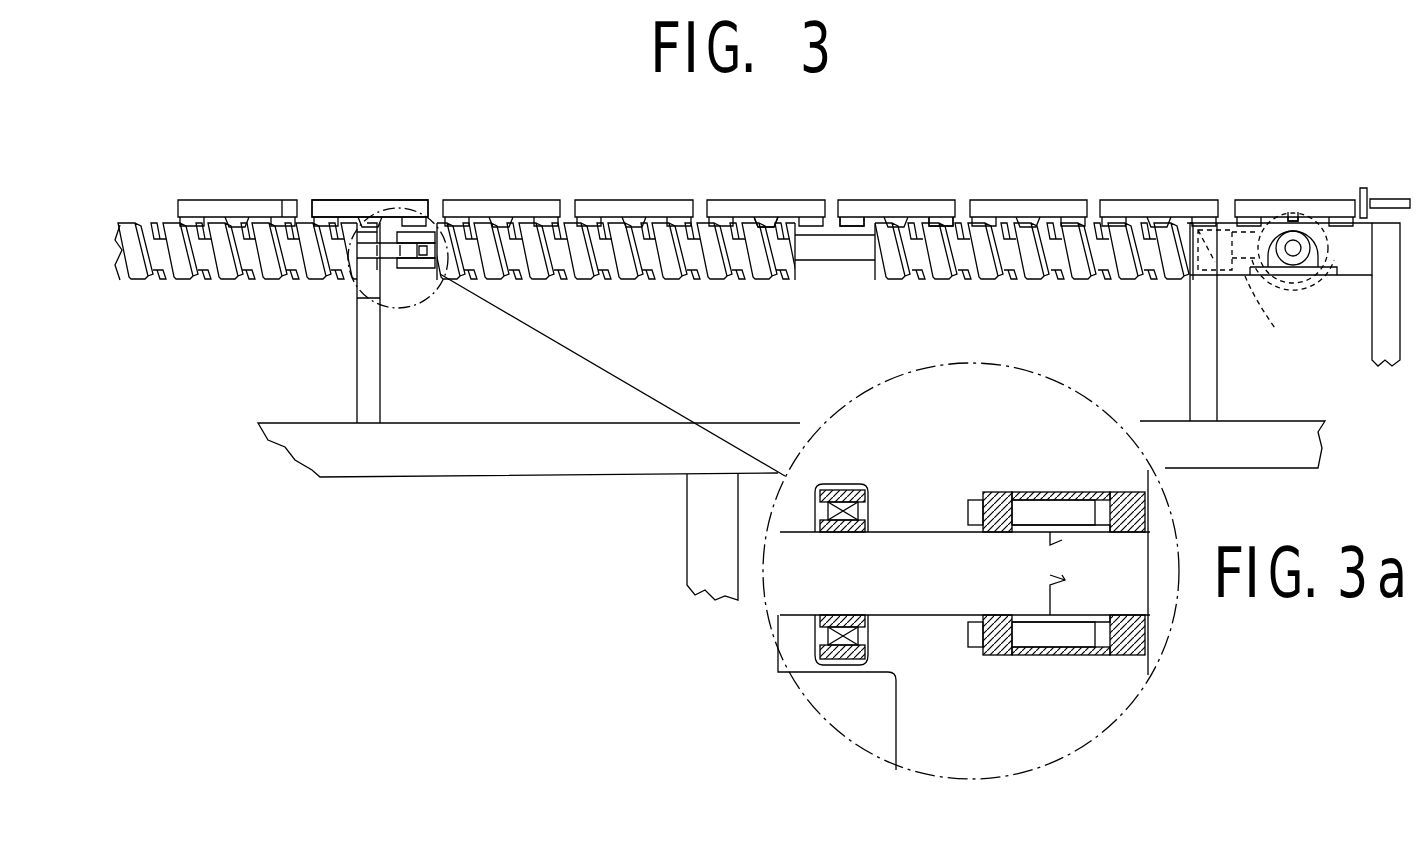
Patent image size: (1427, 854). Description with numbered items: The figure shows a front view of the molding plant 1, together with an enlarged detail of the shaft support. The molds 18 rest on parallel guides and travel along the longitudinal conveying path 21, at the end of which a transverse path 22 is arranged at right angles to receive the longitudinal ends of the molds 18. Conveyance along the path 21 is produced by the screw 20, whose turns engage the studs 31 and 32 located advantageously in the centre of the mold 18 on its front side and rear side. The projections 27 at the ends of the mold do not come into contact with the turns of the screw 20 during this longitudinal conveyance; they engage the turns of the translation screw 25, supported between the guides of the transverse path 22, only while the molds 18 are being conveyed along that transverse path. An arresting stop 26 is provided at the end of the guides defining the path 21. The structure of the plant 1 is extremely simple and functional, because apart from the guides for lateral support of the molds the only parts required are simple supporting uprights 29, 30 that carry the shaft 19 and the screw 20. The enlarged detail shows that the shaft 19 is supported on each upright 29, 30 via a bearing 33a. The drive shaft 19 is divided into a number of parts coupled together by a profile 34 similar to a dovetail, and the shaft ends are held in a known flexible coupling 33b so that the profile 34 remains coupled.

In FIG. 3, the molding plant 1 is at (415, 490).
In FIG. 3, the mold 18 is at (633, 205).
In FIG. 3, the shaft 19 is at (838, 247).
In FIG. 3A, the shaft 19 is at (905, 570).
In FIG. 3, the screw 20 is at (742, 262).
In FIG. 3, the path 21 is at (473, 197).
In FIG. 3, the transverse path 22 is at (1357, 228).
In FIG. 3, the translation screw 25 is at (1278, 305).
In FIG. 3, the arresting stop 26 is at (1365, 190).
In FIG. 3, the projections 27 is at (765, 222).
In FIG. 3, the supporting upright 29 is at (362, 372).
In FIG. 3, the supporting upright 30 is at (1200, 318).
In FIG. 3, the stud 31 is at (845, 237).
In FIG. 3, the stud 32 is at (925, 226).
In FIG. 3A, the bearing 33a is at (845, 485).
In FIG. 3, the flexible coupling 33b is at (395, 280).
In FIG. 3A, the flexible coupling 33b is at (1060, 510).
In FIG. 3, the profile 34 is at (440, 280).
In FIG. 3A, the profile 34 is at (1062, 600).